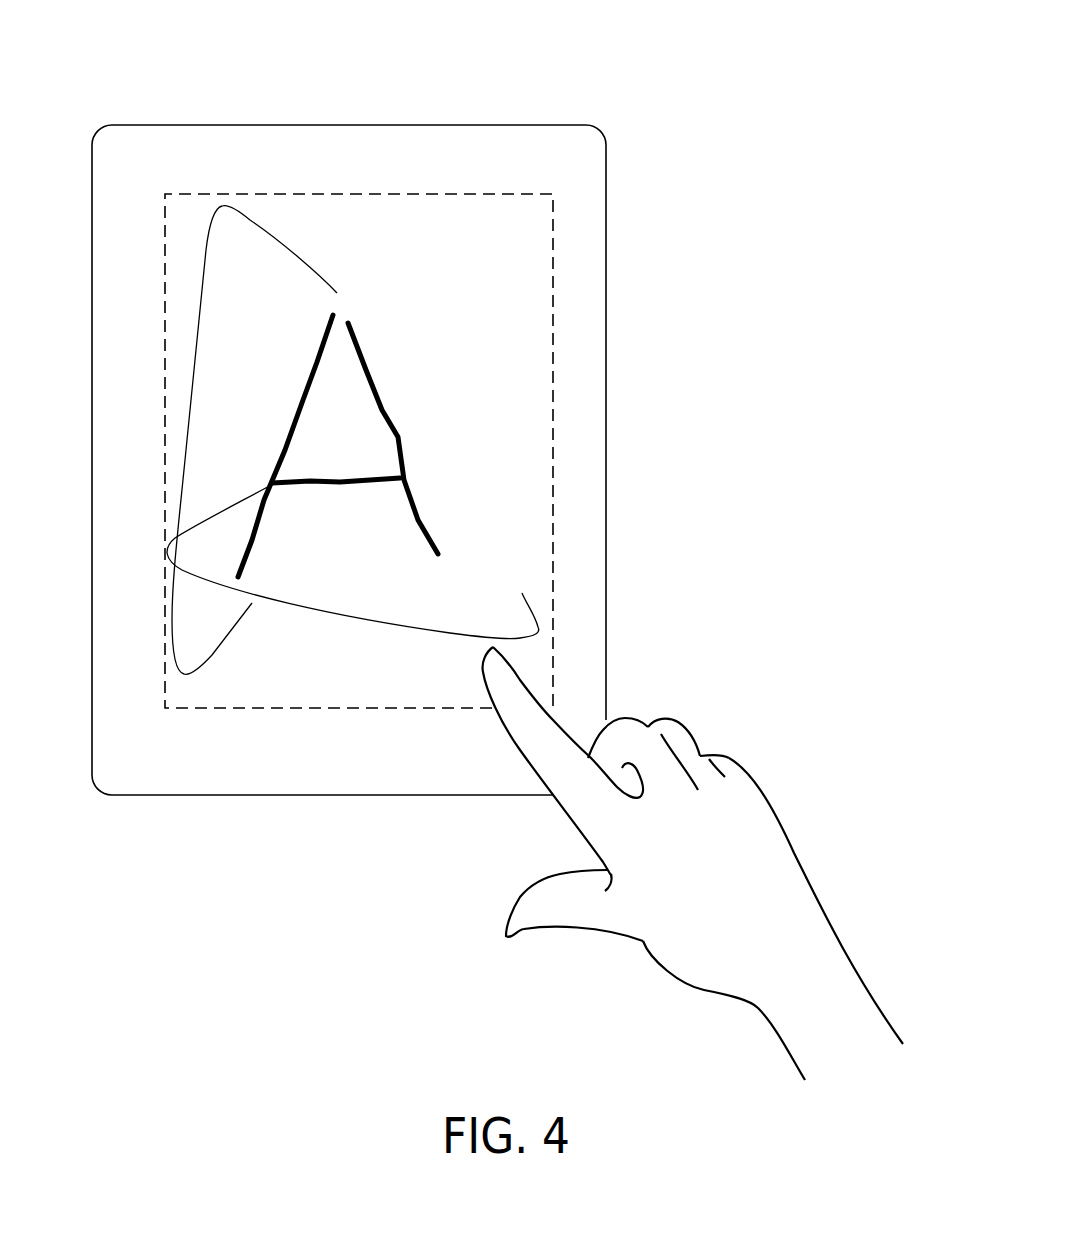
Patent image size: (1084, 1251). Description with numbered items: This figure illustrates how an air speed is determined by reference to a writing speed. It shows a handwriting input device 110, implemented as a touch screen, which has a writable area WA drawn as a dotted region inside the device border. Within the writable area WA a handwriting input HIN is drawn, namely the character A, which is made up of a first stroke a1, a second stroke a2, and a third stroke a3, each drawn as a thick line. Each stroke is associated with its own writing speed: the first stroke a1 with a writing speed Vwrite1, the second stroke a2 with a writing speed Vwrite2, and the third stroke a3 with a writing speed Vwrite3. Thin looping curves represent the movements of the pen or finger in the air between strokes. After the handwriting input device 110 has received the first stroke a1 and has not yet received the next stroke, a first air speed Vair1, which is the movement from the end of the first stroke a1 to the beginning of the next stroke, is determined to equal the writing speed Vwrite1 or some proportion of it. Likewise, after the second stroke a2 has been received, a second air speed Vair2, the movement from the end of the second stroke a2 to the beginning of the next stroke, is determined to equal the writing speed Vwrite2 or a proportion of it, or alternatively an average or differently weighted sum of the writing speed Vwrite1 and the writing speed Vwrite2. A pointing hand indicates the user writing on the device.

The handwriting input device 110 is at (347, 125).
The writable area WA is at (552, 367).
The handwriting input HIN is at (432, 518).
The first stroke a1 is at (285, 432).
The second stroke a2 is at (402, 428).
The third stroke a3 is at (360, 492).
The writing speed Vwrite1 is at (271, 432).
The writing speed Vwrite2 is at (425, 438).
The writing speed Vwrite3 is at (343, 540).
The first air speed Vair1 is at (254, 440).
The second air speed Vair2 is at (353, 568).